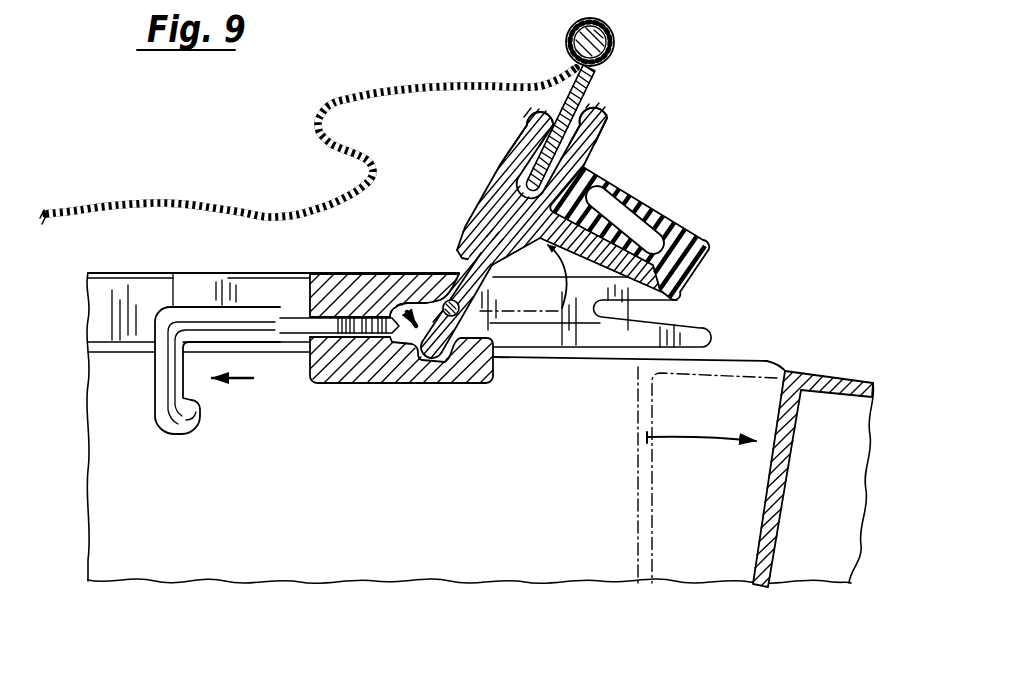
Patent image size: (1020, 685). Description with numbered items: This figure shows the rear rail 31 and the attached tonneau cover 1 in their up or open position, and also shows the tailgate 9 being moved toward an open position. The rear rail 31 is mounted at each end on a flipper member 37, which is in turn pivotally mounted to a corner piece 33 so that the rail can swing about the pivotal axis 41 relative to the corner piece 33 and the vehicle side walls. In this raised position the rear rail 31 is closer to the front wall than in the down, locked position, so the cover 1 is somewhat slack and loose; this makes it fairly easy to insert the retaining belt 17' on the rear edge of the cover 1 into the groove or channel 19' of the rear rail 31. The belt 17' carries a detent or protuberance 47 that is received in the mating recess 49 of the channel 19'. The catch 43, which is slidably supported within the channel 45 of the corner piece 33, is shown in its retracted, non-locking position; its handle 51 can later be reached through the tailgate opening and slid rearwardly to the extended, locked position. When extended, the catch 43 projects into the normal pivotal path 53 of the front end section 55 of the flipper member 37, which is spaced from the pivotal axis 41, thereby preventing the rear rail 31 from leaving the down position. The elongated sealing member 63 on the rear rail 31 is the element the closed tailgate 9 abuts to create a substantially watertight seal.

The tonneau cover 1 is at (162, 196).
The tailgate 9 is at (831, 518).
The retaining belt 17' is at (547, 53).
The groove or channel 19' is at (607, 123).
The rear rail 31 is at (478, 200).
The corner piece 33 is at (419, 396).
The flipper member 37 is at (437, 278).
The pivotal axis 41 is at (467, 315).
The catch 43 is at (345, 324).
The channel 45 is at (340, 348).
The detent or protuberance 47 is at (552, 162).
The mating recess 49 is at (510, 207).
The handle 51 is at (157, 390).
The pivotal path 53 is at (427, 300).
The end section 55 is at (437, 352).
The sealing member 63 is at (663, 197).